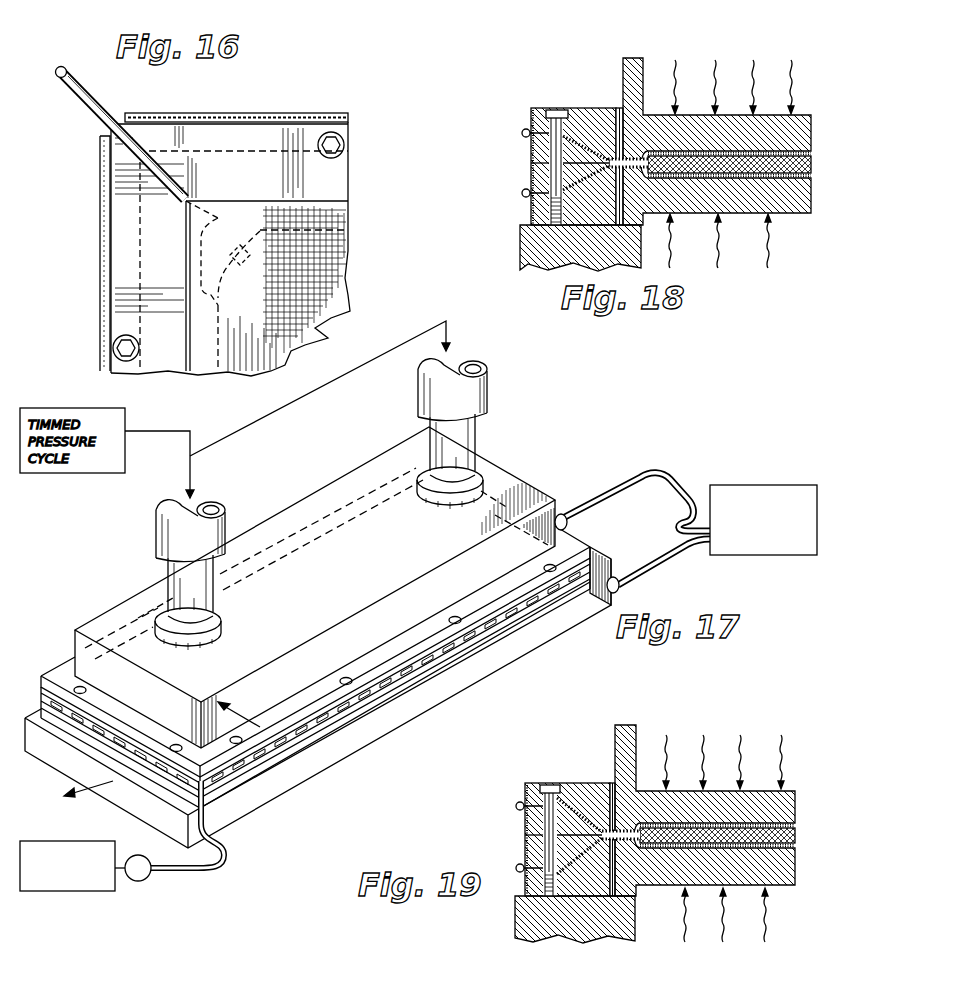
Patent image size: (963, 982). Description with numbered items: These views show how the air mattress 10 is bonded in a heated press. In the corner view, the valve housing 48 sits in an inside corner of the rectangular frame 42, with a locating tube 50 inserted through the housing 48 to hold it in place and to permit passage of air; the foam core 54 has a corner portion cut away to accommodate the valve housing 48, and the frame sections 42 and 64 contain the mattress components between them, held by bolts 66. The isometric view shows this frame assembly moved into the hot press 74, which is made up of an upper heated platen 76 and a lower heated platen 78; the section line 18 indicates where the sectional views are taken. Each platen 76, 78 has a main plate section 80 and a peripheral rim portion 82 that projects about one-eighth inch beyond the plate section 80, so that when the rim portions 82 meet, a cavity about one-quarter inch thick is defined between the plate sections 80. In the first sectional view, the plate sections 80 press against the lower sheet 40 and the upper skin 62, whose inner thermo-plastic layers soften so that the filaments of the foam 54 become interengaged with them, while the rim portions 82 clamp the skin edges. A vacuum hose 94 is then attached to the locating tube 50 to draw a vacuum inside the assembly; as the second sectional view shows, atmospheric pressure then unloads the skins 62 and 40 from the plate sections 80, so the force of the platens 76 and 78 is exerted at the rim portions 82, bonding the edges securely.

In FIG. 18, the air mattress 10 is at (707, 186).
In FIG. 19, the air mattress 10 is at (713, 856).
In FIG. 17, the section line 18 is at (164, 760).
In FIG. 18, the first rectangular sheet 40 is at (740, 182).
In FIG. 19, the first rectangular sheet 40 is at (758, 851).
In FIG. 16, the rectangular frame 42 is at (281, 112).
In FIG. 17, the rectangular frame 42 is at (404, 700).
In FIG. 18, the rectangular frame 42 is at (545, 262).
In FIG. 19, the rectangular frame 42 is at (578, 899).
In FIG. 16, the valve housing 48 is at (241, 220).
In FIG. 16, the locating tube 50 is at (108, 95).
In FIG. 17, the locating tube 50 is at (214, 820).
In FIG. 16, the foam core 54 is at (333, 258).
In FIG. 16, the upper skin 62 is at (274, 300).
In FIG. 18, the upper skin 62 is at (762, 152).
In FIG. 19, the upper skin 62 is at (749, 826).
In FIG. 16, the second frame section 64 is at (349, 181).
In FIG. 17, the second frame section 64 is at (396, 673).
In FIG. 18, the second frame section 64 is at (580, 109).
In FIG. 19, the second frame section 64 is at (572, 784).
In FIG. 16, the bolt 66 is at (346, 147).
In FIG. 18, the bolt 66 is at (561, 109).
In FIG. 19, the bolt 66 is at (551, 785).
In FIG. 17, the hot press 74 is at (525, 475).
In FIG. 17, the upper heated platen 76 is at (566, 516).
In FIG. 17, the lower heated platen 78 is at (543, 638).
In FIG. 18, the plate section 80 is at (699, 116).
In FIG. 19, the plate section 80 is at (681, 792).
In FIG. 18, the peripheral rim portion 82 is at (621, 112).
In FIG. 19, the peripheral rim portion 82 is at (615, 786).
In FIG. 17, the vacuum hose 94 is at (170, 872).